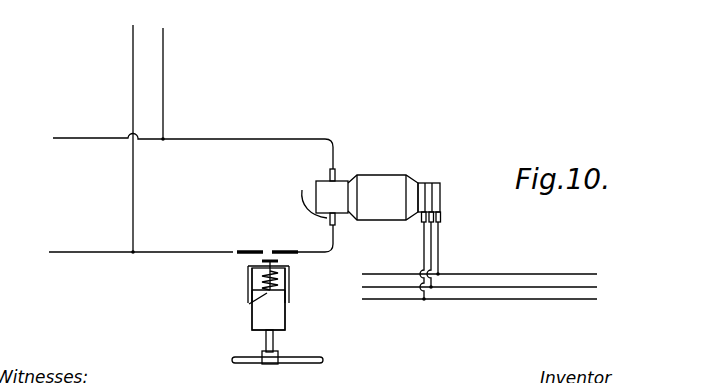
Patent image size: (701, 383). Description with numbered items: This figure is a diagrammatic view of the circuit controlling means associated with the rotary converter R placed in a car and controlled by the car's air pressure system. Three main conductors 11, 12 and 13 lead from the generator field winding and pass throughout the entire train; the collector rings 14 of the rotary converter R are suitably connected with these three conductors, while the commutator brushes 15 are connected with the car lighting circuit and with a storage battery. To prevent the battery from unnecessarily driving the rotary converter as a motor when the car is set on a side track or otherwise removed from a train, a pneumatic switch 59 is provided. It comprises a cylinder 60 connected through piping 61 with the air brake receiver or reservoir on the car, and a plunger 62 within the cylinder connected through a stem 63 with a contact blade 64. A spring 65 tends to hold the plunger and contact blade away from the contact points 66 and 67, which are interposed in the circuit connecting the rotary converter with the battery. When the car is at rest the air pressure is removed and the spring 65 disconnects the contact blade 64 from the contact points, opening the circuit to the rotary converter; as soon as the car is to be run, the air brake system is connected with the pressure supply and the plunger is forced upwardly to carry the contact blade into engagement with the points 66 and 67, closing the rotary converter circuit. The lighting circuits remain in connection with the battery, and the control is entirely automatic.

The conductor 11 is at (505, 274).
The conductor 12 is at (540, 287).
The conductor 13 is at (570, 299).
The collector rings 14 is at (430, 185).
The commutator brushes 15 is at (315, 177).
The rotary converter R is at (381, 184).
The pneumatic switch 59 is at (248, 293).
The cylinder 60 is at (282, 318).
The piping 61 is at (305, 363).
The plunger 62 is at (248, 303).
The stem 63 is at (286, 293).
The contact blade 64 is at (278, 262).
The spring 65 is at (247, 267).
The contact point 66 is at (255, 250).
The contact point 67 is at (286, 251).